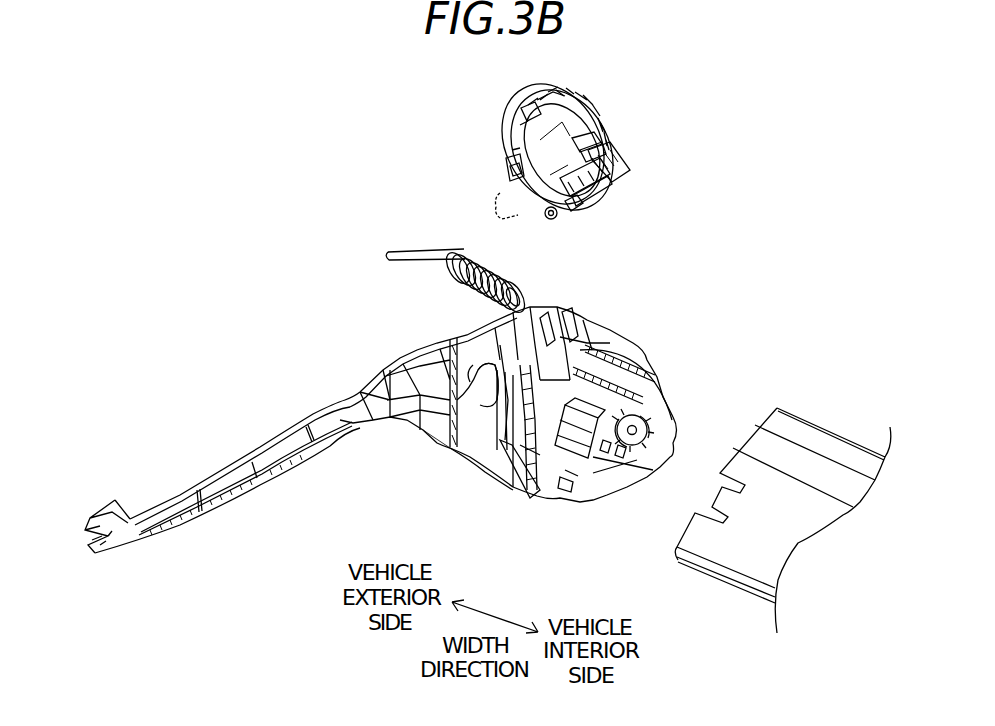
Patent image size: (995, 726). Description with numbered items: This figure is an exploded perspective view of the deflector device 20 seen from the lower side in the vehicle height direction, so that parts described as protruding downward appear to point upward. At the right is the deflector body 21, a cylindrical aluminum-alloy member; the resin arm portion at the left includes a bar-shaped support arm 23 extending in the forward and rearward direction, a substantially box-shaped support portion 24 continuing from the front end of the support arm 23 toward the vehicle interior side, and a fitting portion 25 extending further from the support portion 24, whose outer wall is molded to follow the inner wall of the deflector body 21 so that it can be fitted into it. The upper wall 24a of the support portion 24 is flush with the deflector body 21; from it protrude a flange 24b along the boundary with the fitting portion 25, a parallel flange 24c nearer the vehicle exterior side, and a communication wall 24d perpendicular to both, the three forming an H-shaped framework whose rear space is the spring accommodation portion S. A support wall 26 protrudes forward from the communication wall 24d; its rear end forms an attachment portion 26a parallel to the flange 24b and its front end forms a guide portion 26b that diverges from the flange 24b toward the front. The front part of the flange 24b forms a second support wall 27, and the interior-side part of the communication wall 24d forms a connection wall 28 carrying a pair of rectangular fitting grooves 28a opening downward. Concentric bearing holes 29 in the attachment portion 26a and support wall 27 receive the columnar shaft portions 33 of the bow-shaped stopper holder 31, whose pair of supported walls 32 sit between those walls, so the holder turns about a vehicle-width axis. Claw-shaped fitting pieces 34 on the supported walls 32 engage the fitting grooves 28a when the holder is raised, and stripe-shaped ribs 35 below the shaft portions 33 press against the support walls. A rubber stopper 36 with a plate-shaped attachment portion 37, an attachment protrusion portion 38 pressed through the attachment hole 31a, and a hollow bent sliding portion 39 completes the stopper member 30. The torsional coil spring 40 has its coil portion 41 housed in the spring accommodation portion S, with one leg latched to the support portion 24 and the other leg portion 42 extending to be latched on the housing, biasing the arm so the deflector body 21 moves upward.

The deflector device 20 is at (635, 542).
The deflector body 21 is at (820, 431).
The support arm 23 is at (237, 480).
The support portion 24 is at (600, 330).
The upper wall 24a is at (476, 458).
The flange 24b is at (527, 494).
The flange 24c is at (428, 351).
The communication wall 24d is at (482, 348).
The fitting portion 25 is at (652, 370).
The support wall 26 is at (546, 264).
The attachment portion 26a is at (550, 318).
The guide portion 26b is at (576, 320).
The support wall 27 is at (616, 339).
The connection wall 28 is at (501, 486).
The fitting grooves 28a is at (654, 393).
The bearing holes 29 is at (588, 488).
The stopper member 30 is at (686, 86).
The stopper holder 31 is at (584, 114).
The attachment hole 31a is at (556, 100).
The supported walls 32 is at (510, 164).
The shaft portions 33 is at (573, 208).
The fitting pieces 34 is at (514, 202).
The ribs 35 is at (548, 218).
The stopper 36 is at (624, 170).
The attachment portion 37 is at (606, 192).
The attachment protrusion portion 38 is at (608, 188).
The sliding portion 39 is at (594, 144).
The spring 40 is at (458, 254).
The coil portion 41 is at (454, 267).
The other leg portion 42 is at (409, 248).
The spring accommodation portion S is at (447, 440).